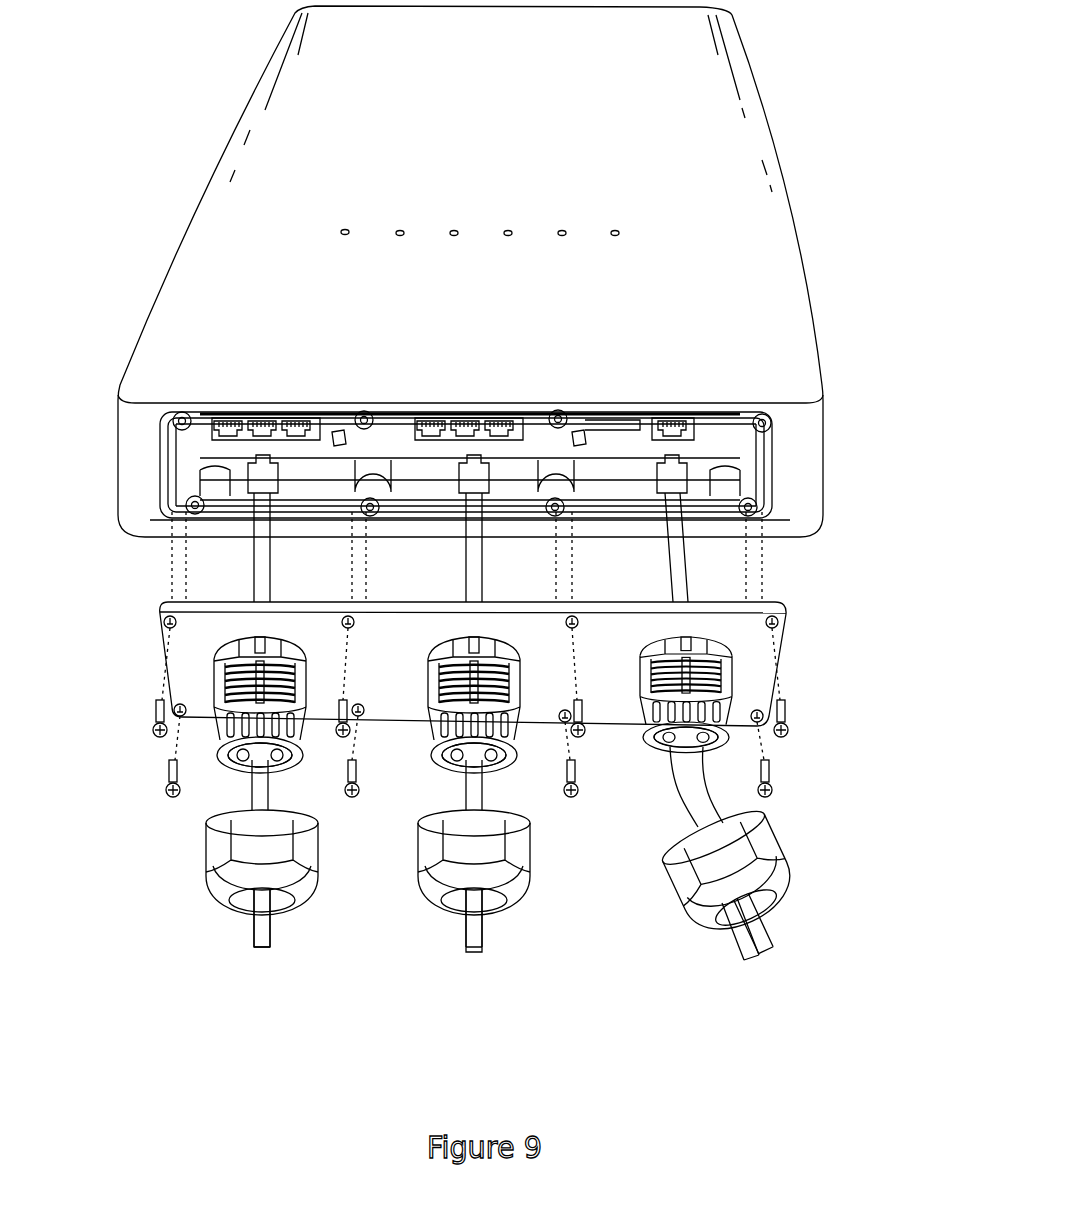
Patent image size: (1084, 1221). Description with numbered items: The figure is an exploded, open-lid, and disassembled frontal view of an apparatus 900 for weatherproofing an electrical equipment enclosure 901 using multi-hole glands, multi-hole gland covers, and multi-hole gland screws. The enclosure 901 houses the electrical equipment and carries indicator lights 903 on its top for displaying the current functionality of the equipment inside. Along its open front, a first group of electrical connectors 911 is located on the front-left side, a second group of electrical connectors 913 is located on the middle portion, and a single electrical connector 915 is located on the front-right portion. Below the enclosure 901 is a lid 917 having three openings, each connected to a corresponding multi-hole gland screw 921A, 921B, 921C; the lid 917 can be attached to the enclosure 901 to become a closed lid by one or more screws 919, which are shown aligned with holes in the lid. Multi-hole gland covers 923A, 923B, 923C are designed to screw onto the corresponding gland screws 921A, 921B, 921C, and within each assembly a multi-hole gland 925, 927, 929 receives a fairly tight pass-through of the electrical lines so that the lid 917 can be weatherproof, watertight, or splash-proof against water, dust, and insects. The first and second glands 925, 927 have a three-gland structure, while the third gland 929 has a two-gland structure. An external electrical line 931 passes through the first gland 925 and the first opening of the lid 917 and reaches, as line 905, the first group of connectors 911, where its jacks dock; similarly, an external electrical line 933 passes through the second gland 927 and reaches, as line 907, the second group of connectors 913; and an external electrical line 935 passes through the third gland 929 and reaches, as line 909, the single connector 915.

The apparatus 900 is at (493, 1087).
The electrical equipment enclosure 901 is at (292, 163).
The indicator lights 903 is at (333, 229).
The electrical line reaching first group of connectors 905 is at (248, 540).
The electrical line reaching second group of connectors 907 is at (458, 572).
The electrical line reaching single connector 909 is at (680, 550).
The first group of electrical connectors 911 is at (262, 413).
The second group of electrical connectors 913 is at (465, 413).
The single electrical connector 915 is at (661, 413).
The lid 917 is at (750, 647).
The screws 919 is at (792, 738).
The multi-hole gland screw 921A is at (217, 678).
The multi-hole gland screw 921B is at (430, 678).
The multi-hole gland screw 921C is at (667, 648).
The multi-hole gland cover 923A is at (225, 845).
The multi-hole gland cover 923B is at (434, 852).
The multi-hole gland cover 923C is at (680, 865).
The first weatherproofed multi-hole gland 925 is at (283, 752).
The second weatherproofed multi-hole gland 927 is at (500, 756).
The third weatherproofed multi-hole gland 929 is at (705, 735).
The external electrical line 931 is at (275, 940).
The external electrical line 933 is at (490, 940).
The external electrical line 935 is at (772, 940).